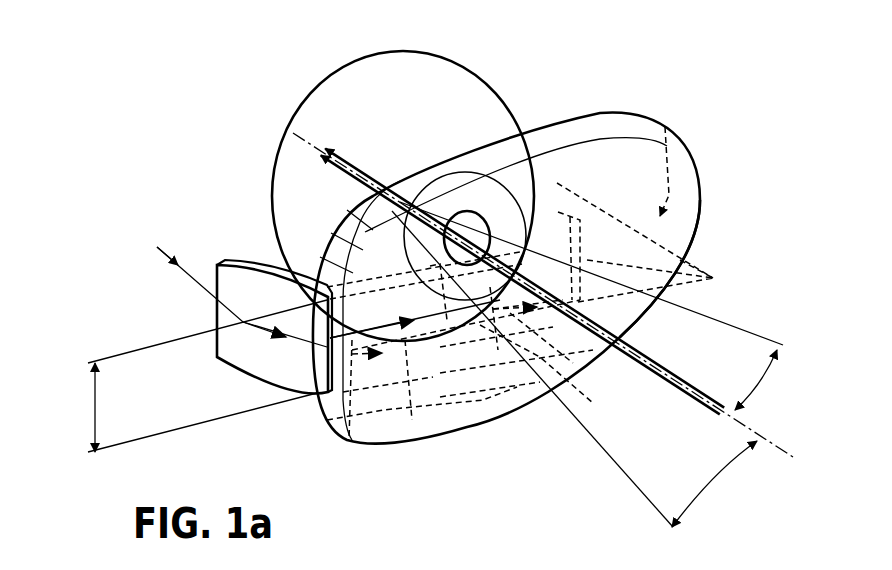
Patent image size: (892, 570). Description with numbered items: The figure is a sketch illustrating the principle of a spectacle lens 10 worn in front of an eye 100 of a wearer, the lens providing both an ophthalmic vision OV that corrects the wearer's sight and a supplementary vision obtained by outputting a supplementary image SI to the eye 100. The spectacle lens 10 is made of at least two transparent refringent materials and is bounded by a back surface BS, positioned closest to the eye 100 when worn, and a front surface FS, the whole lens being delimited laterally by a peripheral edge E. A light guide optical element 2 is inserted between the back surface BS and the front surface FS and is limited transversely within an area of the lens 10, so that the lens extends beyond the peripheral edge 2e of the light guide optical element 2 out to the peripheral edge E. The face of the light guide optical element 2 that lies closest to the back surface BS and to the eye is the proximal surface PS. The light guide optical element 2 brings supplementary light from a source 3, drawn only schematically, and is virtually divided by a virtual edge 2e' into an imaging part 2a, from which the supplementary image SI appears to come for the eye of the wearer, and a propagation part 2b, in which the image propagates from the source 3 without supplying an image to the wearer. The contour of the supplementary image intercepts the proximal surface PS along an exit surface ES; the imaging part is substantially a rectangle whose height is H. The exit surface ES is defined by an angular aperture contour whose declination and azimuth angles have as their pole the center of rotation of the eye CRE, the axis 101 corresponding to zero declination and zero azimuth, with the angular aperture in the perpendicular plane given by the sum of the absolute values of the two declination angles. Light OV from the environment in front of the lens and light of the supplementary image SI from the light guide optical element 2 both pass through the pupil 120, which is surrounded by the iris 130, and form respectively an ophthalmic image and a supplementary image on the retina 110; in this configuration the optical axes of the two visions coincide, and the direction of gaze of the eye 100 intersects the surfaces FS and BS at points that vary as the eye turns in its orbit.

The eye 100 is at (363, 93).
The retina 110 is at (285, 129).
The pupil 120 is at (478, 210).
The iris 130 is at (460, 172).
The axis 101 is at (677, 383).
The spectacle lens 10 is at (592, 136).
The light guide optical element 2 is at (549, 222).
The imaging part 2a is at (498, 350).
The propagation part 2b is at (412, 420).
The peripheral edge 2e is at (716, 278).
The virtual edge 2e' is at (470, 381).
The source 3 is at (270, 382).
The ophthalmic vision OV is at (342, 153).
The supplementary image SI is at (338, 170).
The center of rotation of the eye CRE is at (395, 187).
The back surface BS is at (646, 186).
The peripheral edge E is at (699, 171).
The front surface FS is at (668, 222).
The exit surface ES is at (575, 378).
The proximal surface PS is at (349, 440).
The height of the imaging part H is at (82, 407).